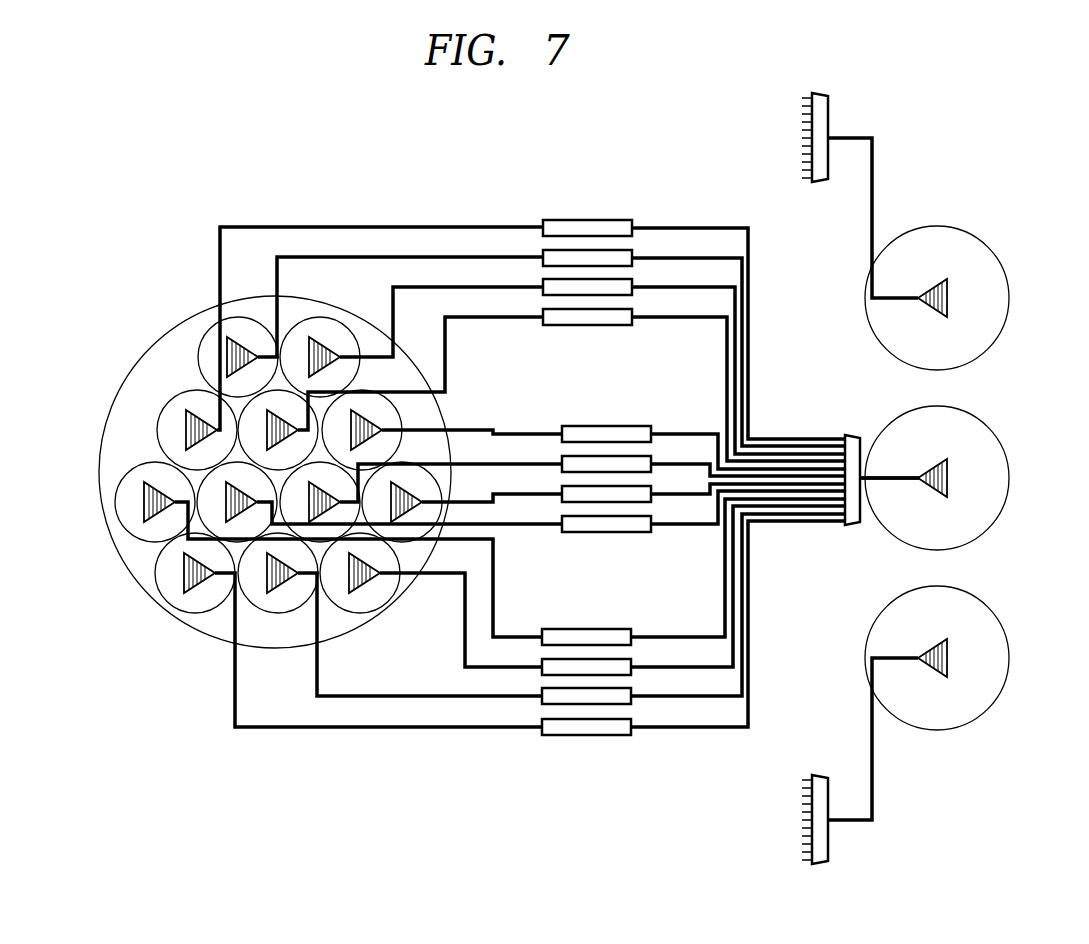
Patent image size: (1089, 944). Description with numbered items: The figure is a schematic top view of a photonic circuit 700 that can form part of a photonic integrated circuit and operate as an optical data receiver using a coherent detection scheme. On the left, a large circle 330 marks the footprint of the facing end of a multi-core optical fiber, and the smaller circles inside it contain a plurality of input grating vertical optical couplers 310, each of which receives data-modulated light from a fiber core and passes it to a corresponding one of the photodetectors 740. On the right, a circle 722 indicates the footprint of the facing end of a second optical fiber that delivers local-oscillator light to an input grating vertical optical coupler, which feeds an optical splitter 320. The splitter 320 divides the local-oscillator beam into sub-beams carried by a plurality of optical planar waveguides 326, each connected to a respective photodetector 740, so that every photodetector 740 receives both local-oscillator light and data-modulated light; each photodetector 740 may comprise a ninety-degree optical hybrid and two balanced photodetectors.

The photonic circuit 700 is at (512, 125).
The footprint 330 is at (122, 394).
The input grating vertical optical coupler 310 is at (220, 362).
The photodetector 740 is at (633, 224).
The optical splitter 320 is at (851, 432).
The optical planar waveguide 326 is at (796, 530).
The footprint of the facing end of the optical fiber 722 is at (971, 465).